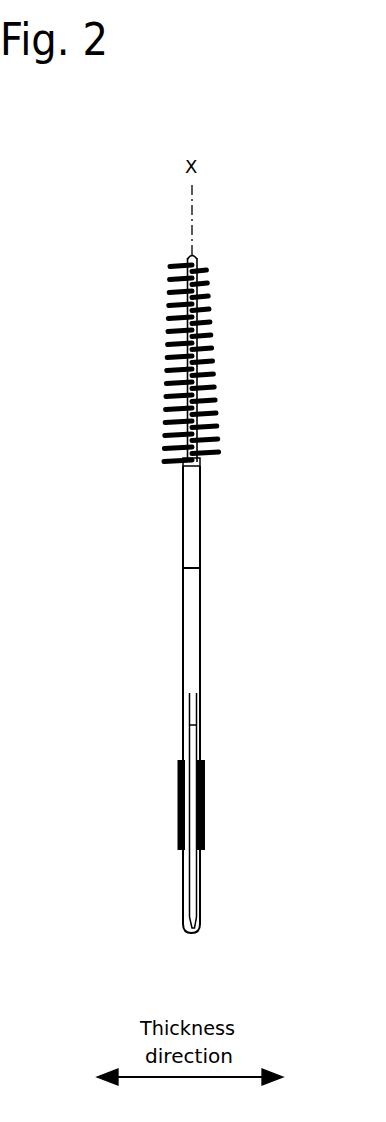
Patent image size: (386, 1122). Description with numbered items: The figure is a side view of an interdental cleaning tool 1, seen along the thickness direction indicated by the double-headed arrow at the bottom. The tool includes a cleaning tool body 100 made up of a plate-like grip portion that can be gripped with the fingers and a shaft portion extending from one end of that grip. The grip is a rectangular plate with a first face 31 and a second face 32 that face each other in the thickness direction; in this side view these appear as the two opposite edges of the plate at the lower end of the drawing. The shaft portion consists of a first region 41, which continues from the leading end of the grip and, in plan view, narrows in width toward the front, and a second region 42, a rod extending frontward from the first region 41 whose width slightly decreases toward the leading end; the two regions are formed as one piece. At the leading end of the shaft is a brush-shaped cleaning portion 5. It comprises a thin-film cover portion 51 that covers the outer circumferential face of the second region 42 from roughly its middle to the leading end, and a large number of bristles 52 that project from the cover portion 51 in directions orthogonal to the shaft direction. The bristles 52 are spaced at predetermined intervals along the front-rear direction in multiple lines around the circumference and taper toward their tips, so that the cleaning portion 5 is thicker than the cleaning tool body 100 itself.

The interdental cleaning tool 1 is at (125, 317).
The cleaning portion 5 is at (208, 352).
The cover portion 51 is at (183, 467).
The bristles 52 is at (172, 370).
The first region 41 is at (195, 629).
The second region 42 is at (195, 535).
The cleaning tool body 100 is at (141, 749).
The first face 31 is at (200, 884).
The second face 32 is at (182, 862).